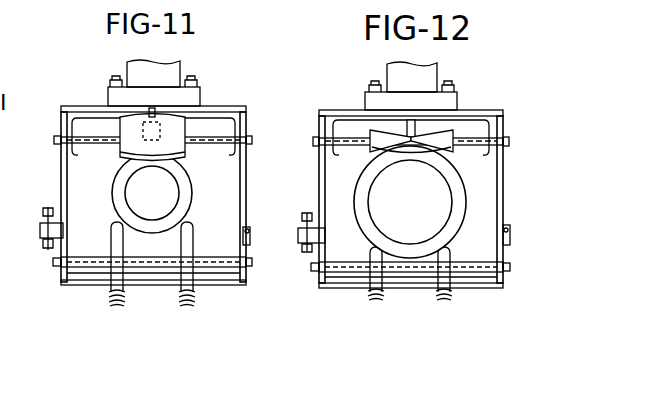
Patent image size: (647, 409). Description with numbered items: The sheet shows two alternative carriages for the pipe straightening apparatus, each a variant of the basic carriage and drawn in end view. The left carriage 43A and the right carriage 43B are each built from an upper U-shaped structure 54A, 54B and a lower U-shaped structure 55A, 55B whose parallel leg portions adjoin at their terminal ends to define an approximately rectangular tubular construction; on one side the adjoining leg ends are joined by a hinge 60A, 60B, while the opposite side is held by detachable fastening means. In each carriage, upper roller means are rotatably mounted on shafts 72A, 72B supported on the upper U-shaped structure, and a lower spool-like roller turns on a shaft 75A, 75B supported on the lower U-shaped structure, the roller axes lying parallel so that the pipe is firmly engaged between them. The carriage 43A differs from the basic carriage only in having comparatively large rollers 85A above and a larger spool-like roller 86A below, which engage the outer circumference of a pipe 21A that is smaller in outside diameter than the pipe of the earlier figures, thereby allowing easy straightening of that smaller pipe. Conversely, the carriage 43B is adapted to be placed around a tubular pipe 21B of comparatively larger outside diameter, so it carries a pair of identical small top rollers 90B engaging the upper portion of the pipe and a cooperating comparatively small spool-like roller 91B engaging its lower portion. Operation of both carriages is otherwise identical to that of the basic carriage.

In FIG. 11, the carriage 43A is at (265, 119).
In FIG. 12, the carriage 43B is at (490, 89).
In FIG. 11, the pipe 21A is at (192, 198).
In FIG. 12, the tubular pipe 21B is at (372, 234).
In FIG. 11, the upper U-shaped structure 54A is at (61, 166).
In FIG. 12, the upper U-shaped structure 54B is at (318, 192).
In FIG. 11, the lower U-shaped structure 55A is at (58, 273).
In FIG. 12, the lower U-shaped structure 55B is at (315, 278).
In FIG. 11, the hinge 60A is at (247, 238).
In FIG. 12, the hinge 60B is at (506, 243).
In FIG. 11, the shaft 72A is at (83, 134).
In FIG. 12, the shaft 72B is at (328, 138).
In FIG. 11, the shaft 75A is at (218, 269).
In FIG. 12, the shaft 75B is at (475, 276).
In FIG. 11, the roller 85A is at (181, 132).
In FIG. 11, the spool-like roller 86A is at (178, 305).
In FIG. 12, the top roller 90B is at (370, 133).
In FIG. 12, the spool-like roller 91B is at (442, 296).